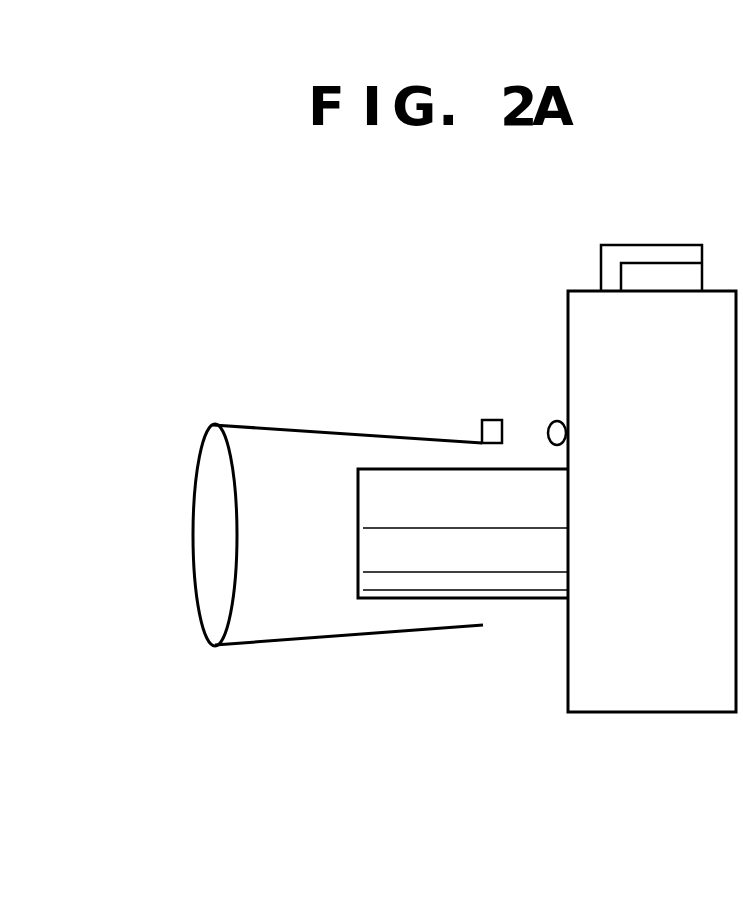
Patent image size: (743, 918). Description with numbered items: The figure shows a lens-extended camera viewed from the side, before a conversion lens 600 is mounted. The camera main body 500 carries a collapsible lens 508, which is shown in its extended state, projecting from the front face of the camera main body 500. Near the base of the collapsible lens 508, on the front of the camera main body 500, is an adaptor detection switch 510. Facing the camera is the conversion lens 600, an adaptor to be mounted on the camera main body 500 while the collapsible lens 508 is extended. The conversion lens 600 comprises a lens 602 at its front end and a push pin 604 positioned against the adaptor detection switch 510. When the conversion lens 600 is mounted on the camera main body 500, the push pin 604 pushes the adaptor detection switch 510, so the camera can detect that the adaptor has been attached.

The camera main body 500 is at (652, 697).
The collapsible lens 508 is at (358, 542).
The adaptor detection switch 510 is at (553, 432).
The conversion lens 600 is at (338, 640).
The lens 602 is at (198, 541).
The push pin 604 is at (490, 432).